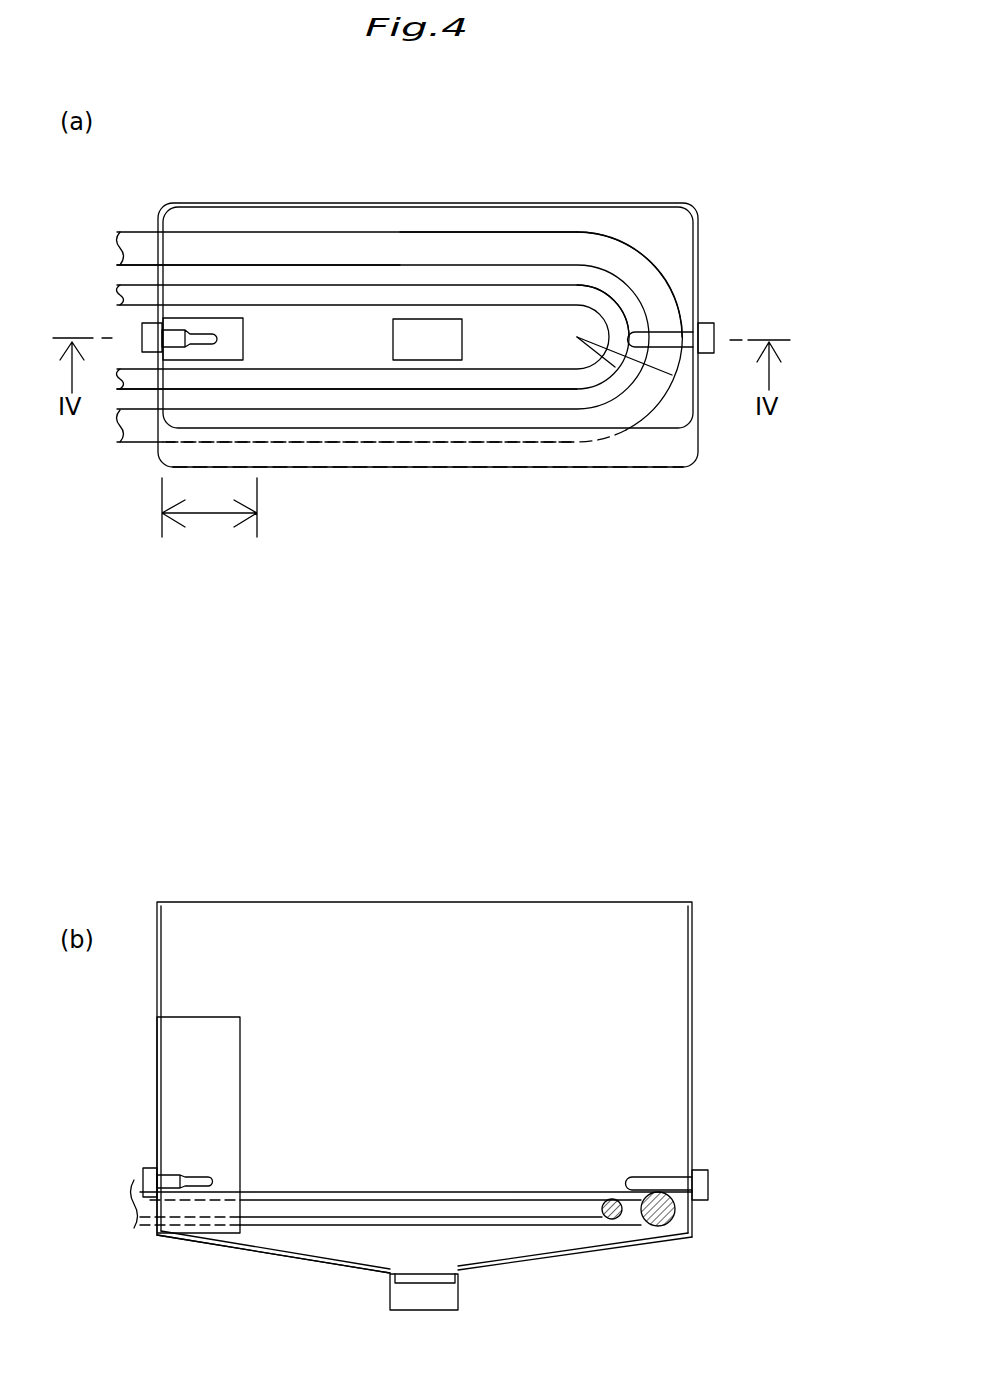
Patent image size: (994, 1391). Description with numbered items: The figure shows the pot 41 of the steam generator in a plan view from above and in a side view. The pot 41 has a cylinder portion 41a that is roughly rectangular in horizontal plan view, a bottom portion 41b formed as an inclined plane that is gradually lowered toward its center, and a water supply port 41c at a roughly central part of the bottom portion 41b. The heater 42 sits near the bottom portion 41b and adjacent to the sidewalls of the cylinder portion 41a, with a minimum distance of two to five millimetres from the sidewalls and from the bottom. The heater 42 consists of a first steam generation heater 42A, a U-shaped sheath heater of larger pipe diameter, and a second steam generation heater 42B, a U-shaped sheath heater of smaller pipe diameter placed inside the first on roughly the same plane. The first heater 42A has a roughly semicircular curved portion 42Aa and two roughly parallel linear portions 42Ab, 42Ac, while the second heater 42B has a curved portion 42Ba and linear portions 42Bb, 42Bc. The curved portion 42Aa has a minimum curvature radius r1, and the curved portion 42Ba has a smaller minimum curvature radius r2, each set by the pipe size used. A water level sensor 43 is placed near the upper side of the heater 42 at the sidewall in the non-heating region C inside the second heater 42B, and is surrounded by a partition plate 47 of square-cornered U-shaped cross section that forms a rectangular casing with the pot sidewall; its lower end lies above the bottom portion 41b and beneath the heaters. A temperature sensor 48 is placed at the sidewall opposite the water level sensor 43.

The pot 41 is at (610, 190).
The cylinder portion 41a is at (567, 467).
The bottom portion 41b is at (277, 1257).
The water supply port 41c is at (432, 340).
The heater 42 is at (419, 716).
The first steam generation heater 42A is at (325, 133).
The second steam generation heater 42B is at (337, 287).
The curved portion 42Aa is at (657, 310).
The linear portion 42Ab is at (510, 248).
The linear portion 42Ac is at (428, 440).
The curved portion 42Ba is at (607, 308).
The linear portion 42Bb is at (257, 283).
The linear portion 42Bc is at (373, 380).
The water level sensor 43 is at (203, 337).
The partition plate 47 is at (247, 337).
The temperature sensor 48 is at (663, 338).
The minimum curvature radius r1 is at (640, 365).
The minimum curvature radius r2 is at (577, 340).
The non-heating portion region C is at (209, 507).